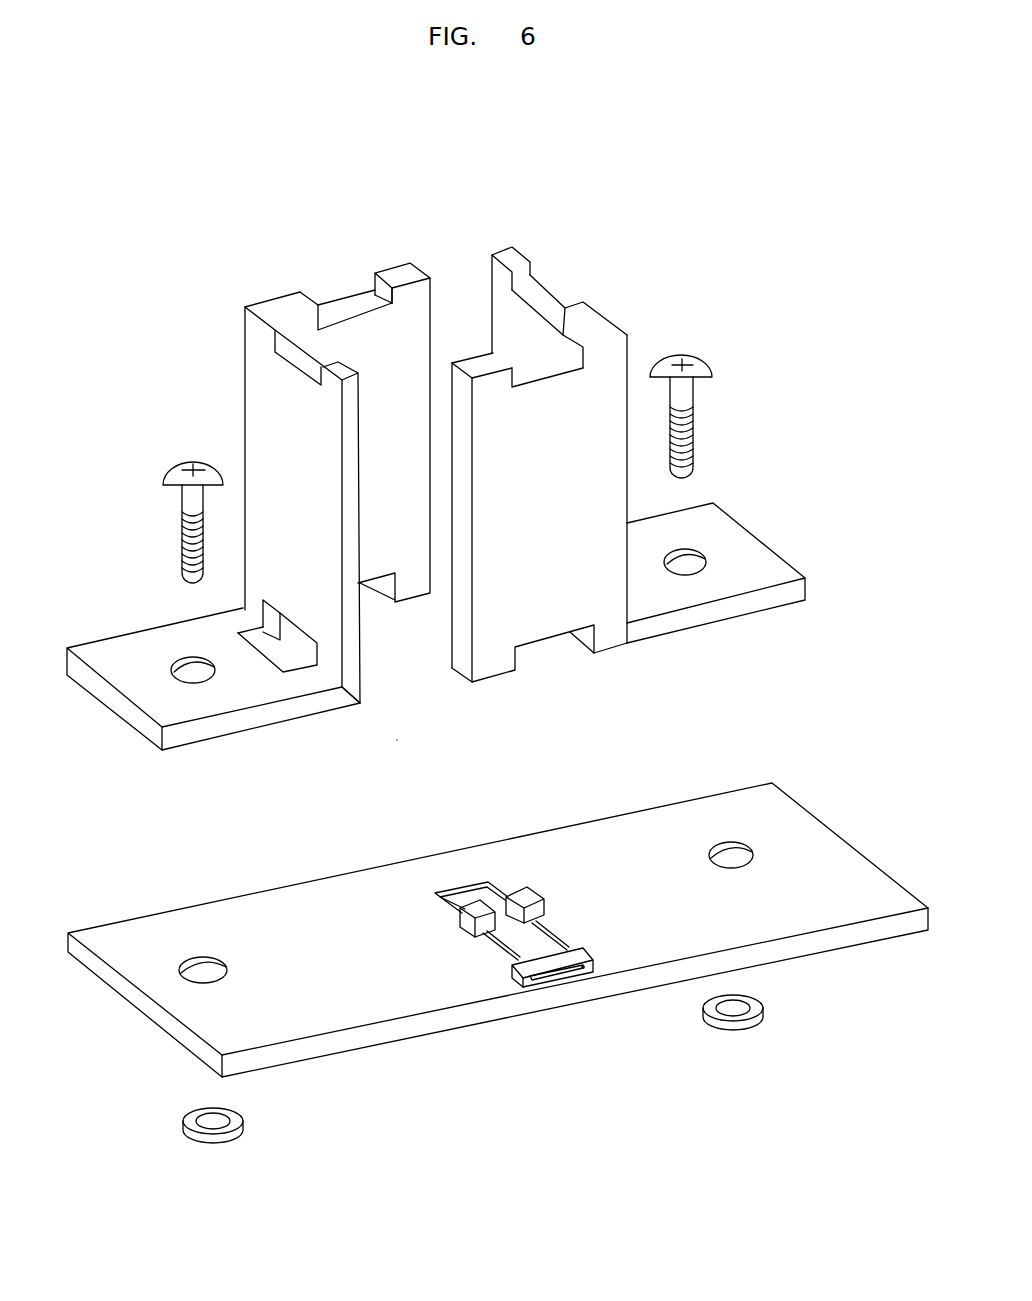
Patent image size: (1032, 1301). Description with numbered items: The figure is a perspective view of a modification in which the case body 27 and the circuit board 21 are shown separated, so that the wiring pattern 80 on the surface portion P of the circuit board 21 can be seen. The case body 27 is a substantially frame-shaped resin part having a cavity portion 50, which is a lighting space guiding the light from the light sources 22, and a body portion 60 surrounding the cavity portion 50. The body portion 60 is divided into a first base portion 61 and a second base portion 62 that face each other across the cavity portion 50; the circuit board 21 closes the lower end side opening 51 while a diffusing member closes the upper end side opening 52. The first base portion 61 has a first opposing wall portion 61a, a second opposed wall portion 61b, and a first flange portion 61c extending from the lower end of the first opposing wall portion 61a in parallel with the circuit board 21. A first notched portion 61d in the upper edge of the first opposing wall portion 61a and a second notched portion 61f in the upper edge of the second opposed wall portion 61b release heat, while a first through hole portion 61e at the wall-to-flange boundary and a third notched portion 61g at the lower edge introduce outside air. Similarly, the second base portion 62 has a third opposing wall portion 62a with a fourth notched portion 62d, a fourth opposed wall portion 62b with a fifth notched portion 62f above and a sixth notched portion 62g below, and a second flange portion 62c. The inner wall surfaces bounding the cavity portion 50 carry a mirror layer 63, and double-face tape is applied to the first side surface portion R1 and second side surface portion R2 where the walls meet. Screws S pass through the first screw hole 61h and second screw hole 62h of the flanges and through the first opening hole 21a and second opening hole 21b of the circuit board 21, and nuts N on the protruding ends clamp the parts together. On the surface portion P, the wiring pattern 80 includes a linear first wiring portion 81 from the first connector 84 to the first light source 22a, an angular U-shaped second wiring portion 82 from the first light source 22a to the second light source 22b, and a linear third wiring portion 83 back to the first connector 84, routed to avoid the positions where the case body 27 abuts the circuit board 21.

The case body 27 is at (571, 180).
The upper end side opening 52 is at (473, 264).
The first side surface portion R1 is at (443, 246).
The second side surface portion R2 is at (451, 699).
The cavity portion 50 is at (411, 676).
The lower end side opening 51 is at (371, 709).
The body portion 60 is at (450, 512).
The first base portion 61 is at (248, 512).
The first opposing wall portion 61a is at (252, 489).
The second opposed wall portion 61b is at (396, 256).
The first flange portion 61c is at (213, 702).
The first notched portion 61d is at (300, 381).
The first through hole portion 61e is at (277, 692).
The second notched portion 61f is at (321, 283).
The third notched portion 61g is at (390, 558).
The first screw hole 61h is at (157, 636).
The second base portion 62 is at (642, 465).
The third opposing wall portion 62a is at (552, 290).
The fourth opposed wall portion 62b is at (560, 519).
The second flange portion 62c is at (730, 589).
The fourth notched portion 62d is at (569, 311).
The fifth notched portion 62f is at (554, 408).
The sixth notched portion 62g is at (539, 636).
The second screw hole 62h is at (748, 532).
The mirror layer 63 is at (507, 384).
The screw S is at (432, 449).
The nut N is at (473, 1090).
The surface portion P is at (498, 931).
The circuit board 21 is at (498, 946).
The first opening hole 21a is at (233, 948).
The second opening hole 21b is at (734, 888).
The light source 22 is at (475, 894).
The first light source 22a is at (426, 918).
The second light source 22b is at (551, 879).
The wiring pattern 80 is at (529, 891).
The first wiring portion 81 is at (486, 954).
The second wiring portion 82 is at (471, 849).
The third wiring portion 83 is at (572, 917).
The first connector 84 is at (580, 960).